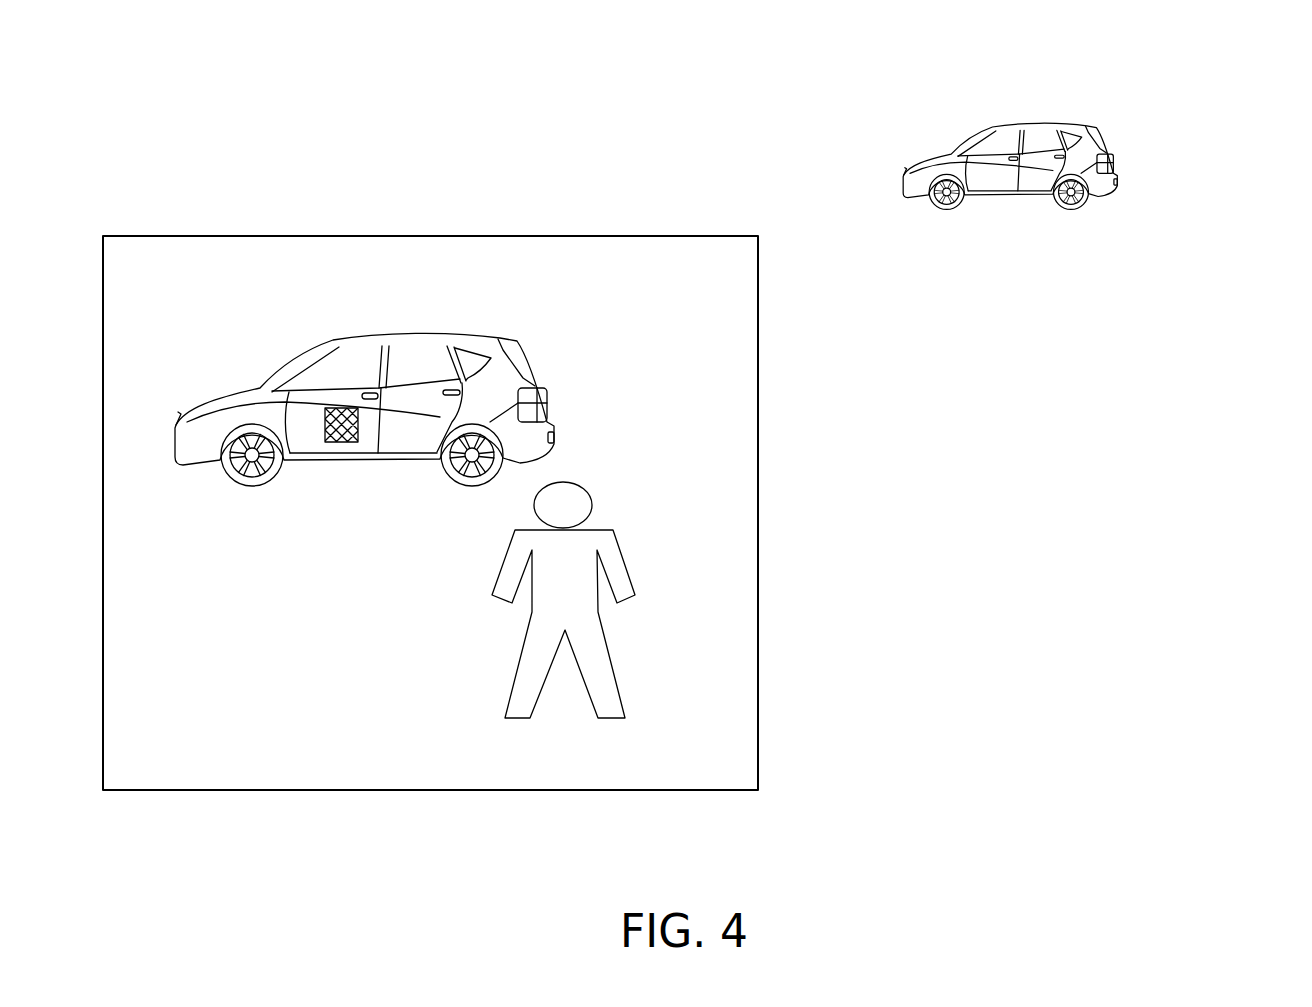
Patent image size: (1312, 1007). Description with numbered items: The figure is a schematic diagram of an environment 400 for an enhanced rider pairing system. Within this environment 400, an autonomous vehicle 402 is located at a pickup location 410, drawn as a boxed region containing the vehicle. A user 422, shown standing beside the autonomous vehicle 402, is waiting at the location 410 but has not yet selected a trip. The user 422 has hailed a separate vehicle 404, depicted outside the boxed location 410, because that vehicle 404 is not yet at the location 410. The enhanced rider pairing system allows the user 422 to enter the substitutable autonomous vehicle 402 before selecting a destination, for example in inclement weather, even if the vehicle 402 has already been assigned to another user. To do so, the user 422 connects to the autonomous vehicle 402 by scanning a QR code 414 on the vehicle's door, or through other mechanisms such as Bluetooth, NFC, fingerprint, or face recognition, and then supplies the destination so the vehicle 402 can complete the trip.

The environment 400 is at (1212, 57).
The autonomous vehicle 402 is at (308, 350).
The vehicle 404 is at (968, 140).
The pickup location 410 is at (393, 235).
The QR code 414 is at (343, 447).
The user 422 is at (600, 540).